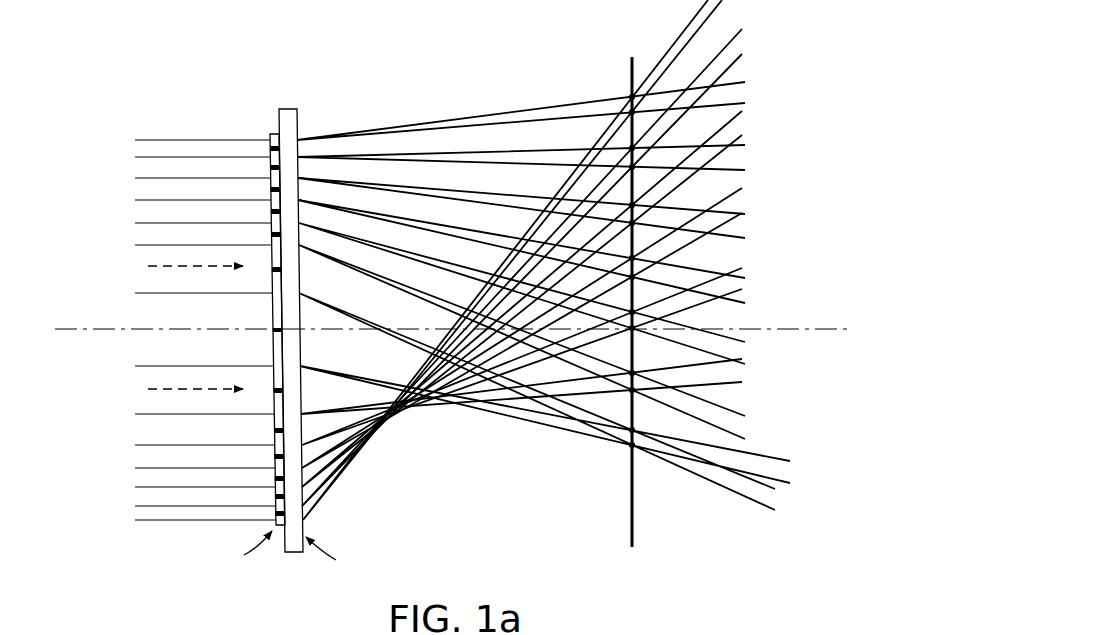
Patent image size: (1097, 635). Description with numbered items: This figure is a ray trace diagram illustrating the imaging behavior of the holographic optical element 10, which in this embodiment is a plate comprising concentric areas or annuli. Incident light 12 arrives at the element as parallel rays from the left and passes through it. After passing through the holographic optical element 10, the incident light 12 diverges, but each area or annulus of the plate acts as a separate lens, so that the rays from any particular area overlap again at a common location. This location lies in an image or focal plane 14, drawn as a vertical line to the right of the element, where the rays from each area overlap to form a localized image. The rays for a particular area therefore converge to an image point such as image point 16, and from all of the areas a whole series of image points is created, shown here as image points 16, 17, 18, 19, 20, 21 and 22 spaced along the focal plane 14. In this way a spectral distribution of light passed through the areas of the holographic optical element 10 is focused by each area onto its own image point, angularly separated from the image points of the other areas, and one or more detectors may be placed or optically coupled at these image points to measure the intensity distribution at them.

The holographic optical element 10 is at (280, 106).
The incident light 12 is at (138, 520).
The image or focal plane 14 is at (636, 538).
The image point 16 is at (628, 452).
The image point 17 is at (632, 390).
The image point 18 is at (632, 328).
The image point 19 is at (632, 277).
The image point 20 is at (632, 223).
The image point 21 is at (632, 167).
The image point 22 is at (632, 112).